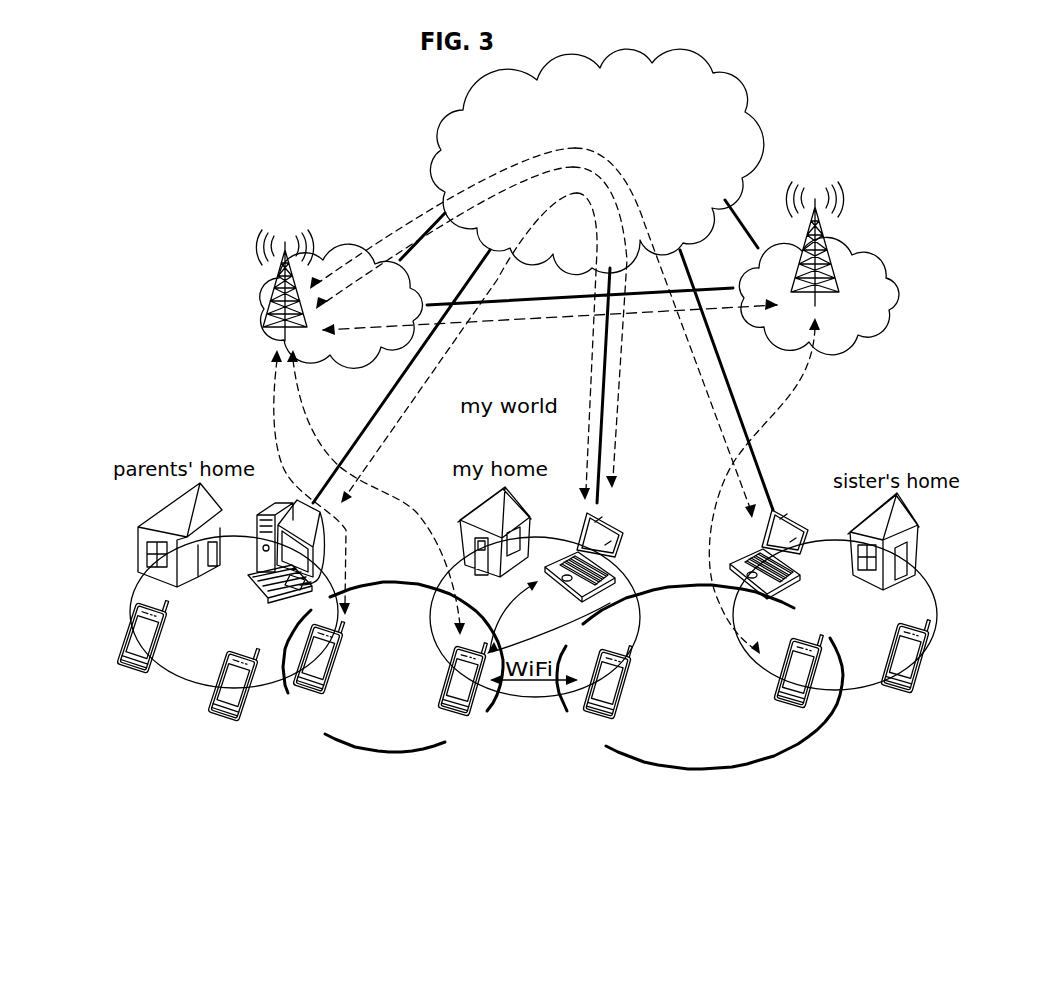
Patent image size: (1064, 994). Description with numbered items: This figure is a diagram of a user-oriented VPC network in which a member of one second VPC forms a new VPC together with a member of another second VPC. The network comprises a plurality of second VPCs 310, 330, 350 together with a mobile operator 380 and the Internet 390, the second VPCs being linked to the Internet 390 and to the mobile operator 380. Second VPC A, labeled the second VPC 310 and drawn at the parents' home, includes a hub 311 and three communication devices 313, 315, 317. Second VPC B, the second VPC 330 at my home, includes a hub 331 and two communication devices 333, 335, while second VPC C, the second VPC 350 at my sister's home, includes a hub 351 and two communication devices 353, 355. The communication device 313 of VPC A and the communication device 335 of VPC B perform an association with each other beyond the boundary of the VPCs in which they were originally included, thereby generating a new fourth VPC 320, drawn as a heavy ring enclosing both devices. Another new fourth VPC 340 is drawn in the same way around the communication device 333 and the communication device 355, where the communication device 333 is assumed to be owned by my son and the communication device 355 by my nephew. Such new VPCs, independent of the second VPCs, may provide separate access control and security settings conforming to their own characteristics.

The Internet 390 is at (450, 137).
The mobile operator 380 is at (250, 247).
The second VPC 310 is at (268, 698).
The hub 311 is at (337, 545).
The communication device 313 is at (345, 640).
The communication device 315 is at (209, 685).
The communication device 317 is at (122, 627).
The fourth VPC 320 is at (388, 752).
The second VPC 330 is at (518, 700).
The hub 331 is at (612, 520).
The communication device 333 is at (632, 680).
The communication device 335 is at (440, 679).
The fourth VPC 340 is at (697, 769).
The second VPC 350 is at (937, 605).
The hub 351 is at (735, 560).
The communication device 353 is at (928, 680).
The communication device 355 is at (820, 706).